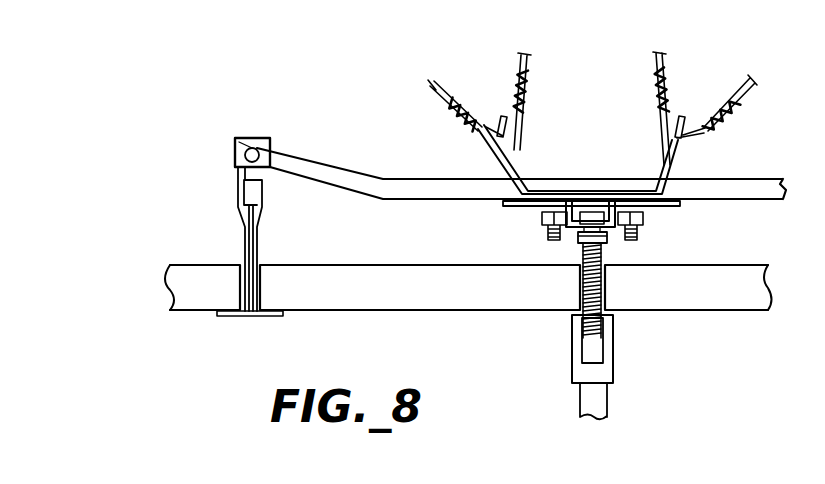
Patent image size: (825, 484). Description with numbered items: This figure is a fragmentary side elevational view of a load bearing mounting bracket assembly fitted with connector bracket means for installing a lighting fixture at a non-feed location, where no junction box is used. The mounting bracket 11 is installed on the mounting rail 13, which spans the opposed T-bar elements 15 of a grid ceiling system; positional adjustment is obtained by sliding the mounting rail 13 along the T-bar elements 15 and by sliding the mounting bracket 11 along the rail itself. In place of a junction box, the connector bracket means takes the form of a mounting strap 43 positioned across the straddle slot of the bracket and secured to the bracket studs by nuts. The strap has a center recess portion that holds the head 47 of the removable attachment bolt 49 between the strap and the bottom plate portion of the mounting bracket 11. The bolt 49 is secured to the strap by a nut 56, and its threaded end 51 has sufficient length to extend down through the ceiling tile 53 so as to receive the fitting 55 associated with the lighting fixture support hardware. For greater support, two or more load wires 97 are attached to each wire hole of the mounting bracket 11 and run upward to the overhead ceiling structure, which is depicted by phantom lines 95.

The mounting bracket 11 is at (678, 170).
The mounting rail 13 is at (472, 192).
The T-bar elements 15 is at (253, 255).
The mounting strap 43 is at (663, 207).
The head 47 is at (590, 222).
The attachment bolt 49 is at (580, 248).
The threaded end 51 is at (604, 323).
The ceiling tile 53 is at (422, 310).
The fitting 55 is at (605, 372).
The nut 56 is at (608, 242).
The phantom lines 95 is at (238, 180).
The load wires 97 is at (470, 108).